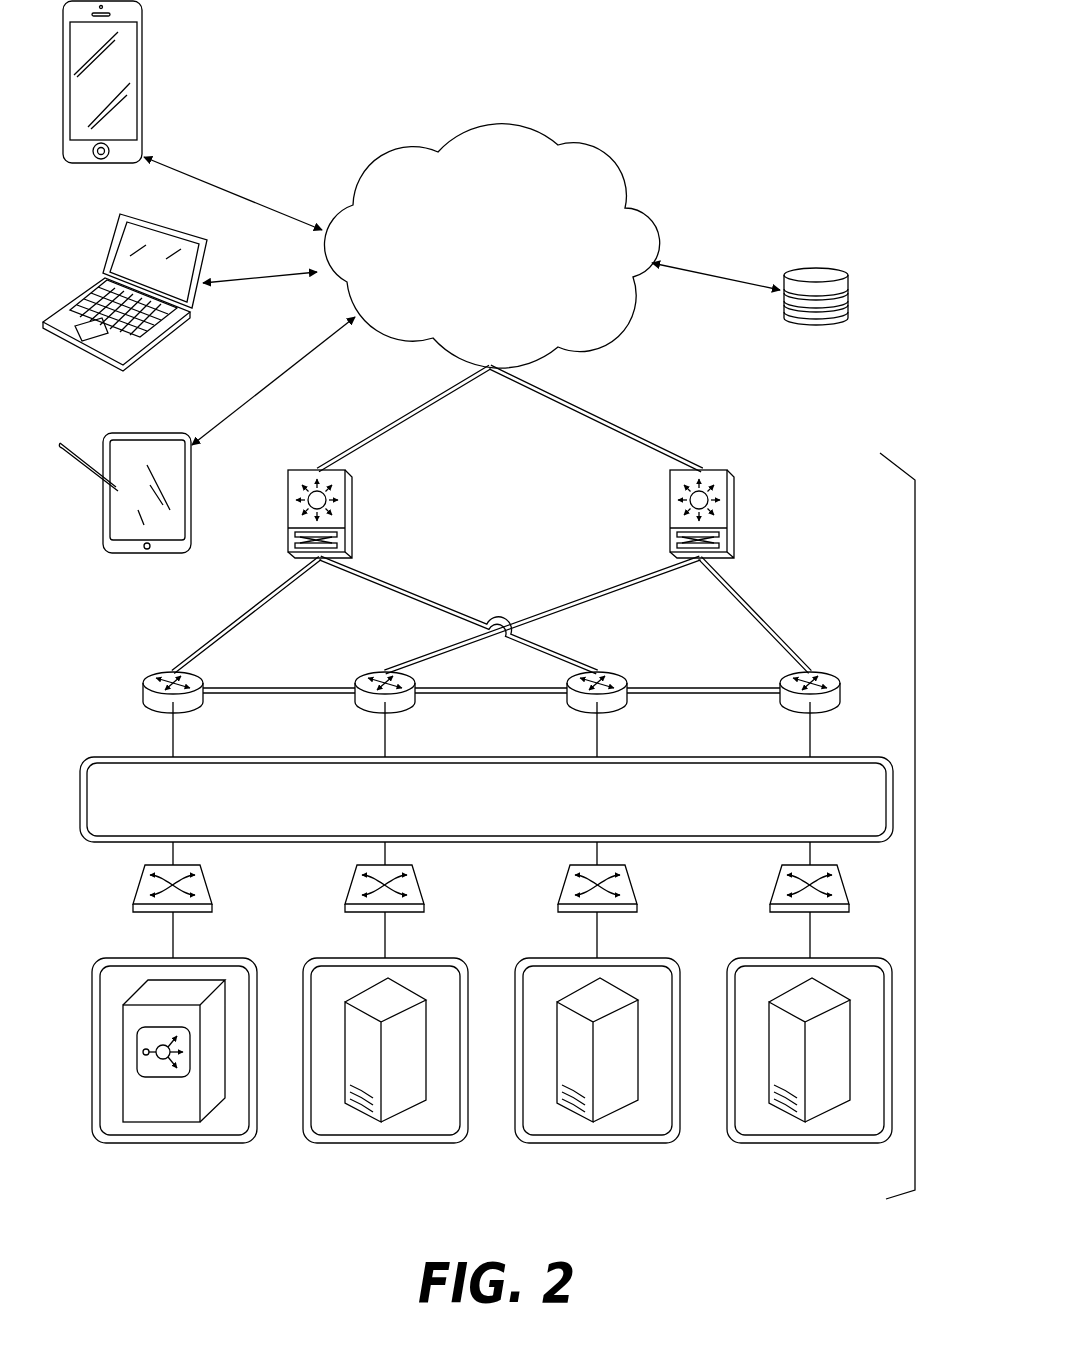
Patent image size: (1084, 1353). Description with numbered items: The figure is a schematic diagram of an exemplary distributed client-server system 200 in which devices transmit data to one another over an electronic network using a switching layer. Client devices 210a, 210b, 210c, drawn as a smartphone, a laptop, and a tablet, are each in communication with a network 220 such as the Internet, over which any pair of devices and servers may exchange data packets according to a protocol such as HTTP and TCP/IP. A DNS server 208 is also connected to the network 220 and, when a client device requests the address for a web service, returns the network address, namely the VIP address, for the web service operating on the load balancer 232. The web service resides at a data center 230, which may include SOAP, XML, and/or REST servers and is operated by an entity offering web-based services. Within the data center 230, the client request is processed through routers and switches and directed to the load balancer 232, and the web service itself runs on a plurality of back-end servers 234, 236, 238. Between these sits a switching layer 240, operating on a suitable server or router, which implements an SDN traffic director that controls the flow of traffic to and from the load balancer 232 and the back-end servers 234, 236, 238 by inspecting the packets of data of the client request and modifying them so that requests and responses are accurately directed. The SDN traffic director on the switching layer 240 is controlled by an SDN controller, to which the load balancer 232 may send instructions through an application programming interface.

The distributed client-server system 200 is at (758, 147).
The DNS server 208 is at (830, 267).
The client device 210a is at (143, 106).
The client device 210b is at (205, 242).
The client device 210c is at (140, 433).
The network 220 is at (608, 150).
The data center 230 is at (918, 595).
The load balancer 232 is at (212, 1143).
The back-end server 234 is at (367, 1143).
The back-end server 236 is at (618, 1143).
The back-end server 238 is at (822, 1143).
The switching layer 240 is at (118, 757).